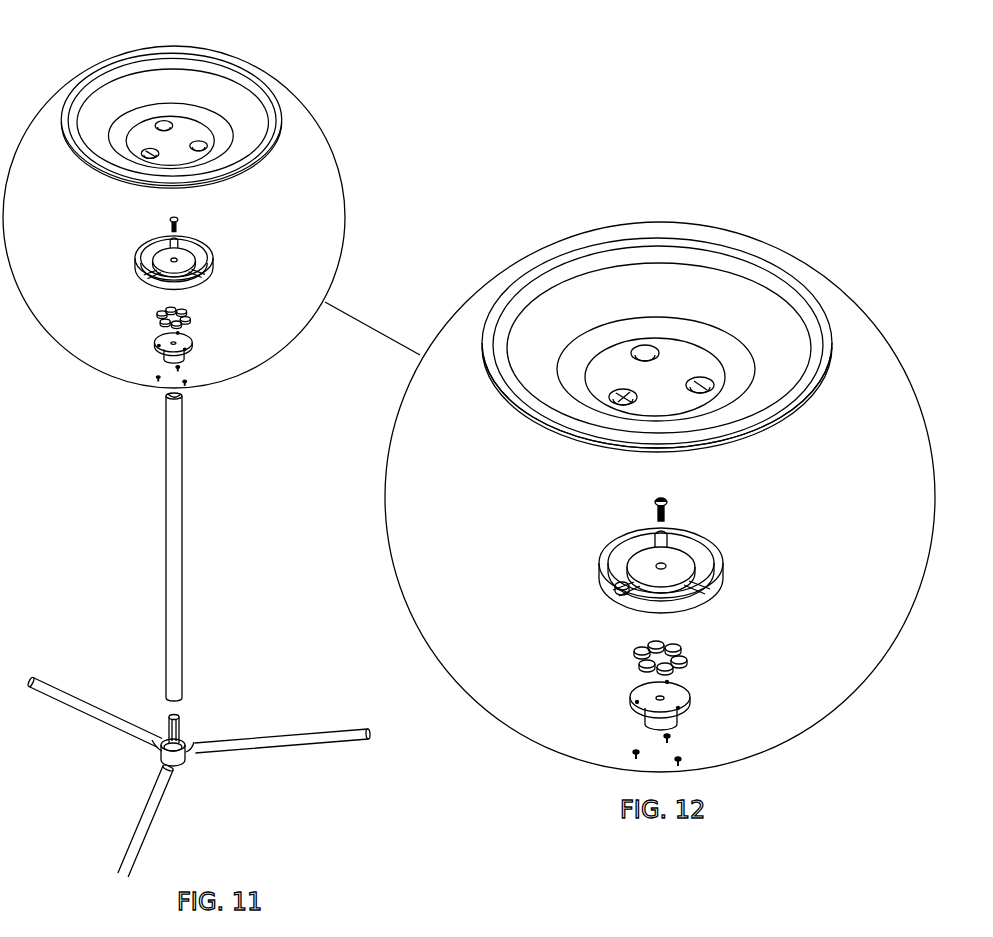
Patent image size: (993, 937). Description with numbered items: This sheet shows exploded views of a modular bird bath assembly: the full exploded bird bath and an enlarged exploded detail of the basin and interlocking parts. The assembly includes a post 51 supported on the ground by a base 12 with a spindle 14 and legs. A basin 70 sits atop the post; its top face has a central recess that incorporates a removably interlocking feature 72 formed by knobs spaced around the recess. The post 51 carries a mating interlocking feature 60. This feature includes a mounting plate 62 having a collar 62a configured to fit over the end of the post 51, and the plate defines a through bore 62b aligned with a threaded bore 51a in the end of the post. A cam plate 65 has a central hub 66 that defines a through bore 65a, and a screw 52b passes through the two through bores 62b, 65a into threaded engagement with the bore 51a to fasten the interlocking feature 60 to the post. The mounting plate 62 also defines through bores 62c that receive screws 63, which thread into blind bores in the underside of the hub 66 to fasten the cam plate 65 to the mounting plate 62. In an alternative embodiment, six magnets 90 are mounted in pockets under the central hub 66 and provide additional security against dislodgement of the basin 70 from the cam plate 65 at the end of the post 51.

In FIG. 11, the base 12 is at (198, 777).
In FIG. 11, the spindle 14 is at (180, 730).
In FIG. 11, the post 51 is at (195, 547).
In FIG. 11, the threaded bore 51a is at (156, 409).
In FIG. 12, the screw 52b is at (653, 498).
In FIG. 11, the mating interlocking feature 60 is at (261, 280).
In FIG. 12, the mounting plate 62 is at (647, 700).
In FIG. 12, the collar 62a is at (668, 727).
In FIG. 12, the through bore 62b is at (663, 698).
In FIG. 12, the through bores 62c is at (637, 702).
In FIG. 12, the screws 63 is at (685, 760).
In FIG. 12, the cam plate 65 is at (658, 557).
In FIG. 12, the through bore 65a is at (667, 564).
In FIG. 12, the central hub 66 is at (683, 572).
In FIG. 12, the basin 70 is at (728, 265).
In FIG. 11, the basin 70 is at (255, 95).
In FIG. 12, the interlocking feature 72 is at (679, 352).
In FIG. 12, the magnets 90 is at (690, 660).